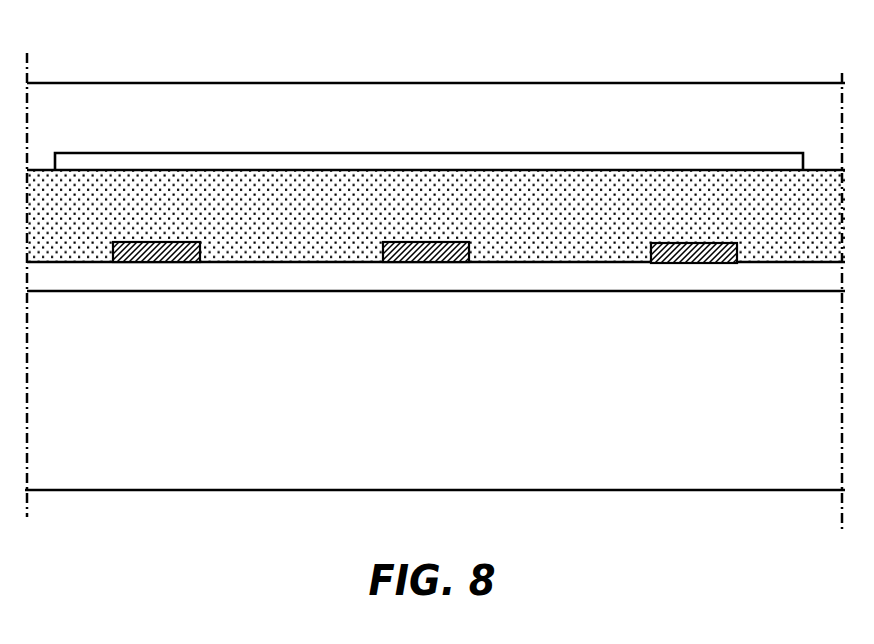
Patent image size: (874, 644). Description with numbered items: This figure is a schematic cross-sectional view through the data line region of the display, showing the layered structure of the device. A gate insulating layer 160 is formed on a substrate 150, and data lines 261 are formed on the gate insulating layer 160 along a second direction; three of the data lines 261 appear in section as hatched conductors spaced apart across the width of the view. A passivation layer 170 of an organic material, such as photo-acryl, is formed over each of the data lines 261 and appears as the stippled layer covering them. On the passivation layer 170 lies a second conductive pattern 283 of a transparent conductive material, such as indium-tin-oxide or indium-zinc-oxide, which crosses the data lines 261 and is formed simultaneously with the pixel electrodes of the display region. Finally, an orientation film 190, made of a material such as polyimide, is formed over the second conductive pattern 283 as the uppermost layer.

The substrate 150 is at (288, 453).
The gate insulating layer 160 is at (585, 278).
The passivation layer 170 is at (152, 192).
The orientation film 190 is at (422, 128).
The data lines 261 is at (160, 255).
The second conductive pattern 283 is at (292, 163).